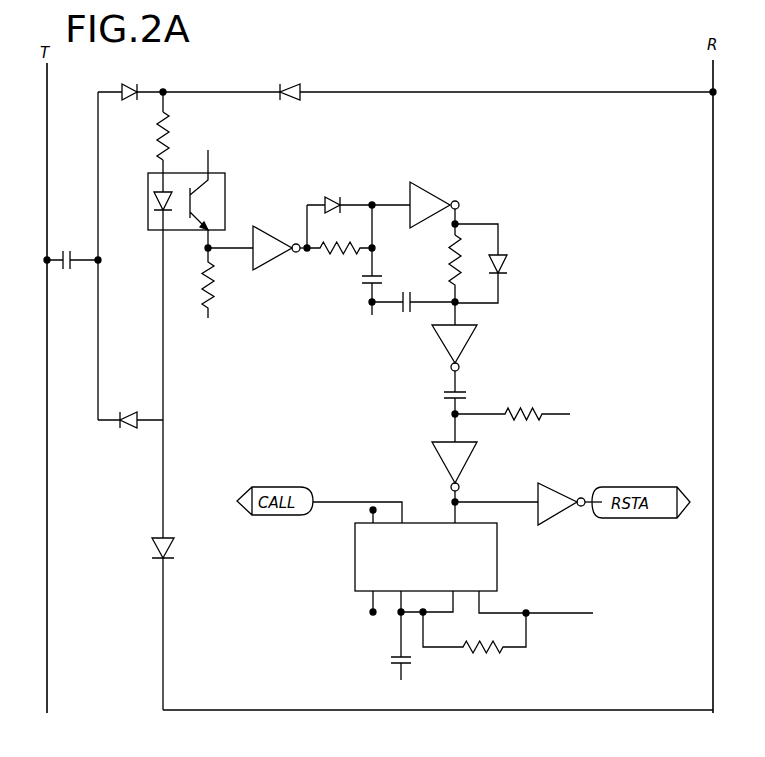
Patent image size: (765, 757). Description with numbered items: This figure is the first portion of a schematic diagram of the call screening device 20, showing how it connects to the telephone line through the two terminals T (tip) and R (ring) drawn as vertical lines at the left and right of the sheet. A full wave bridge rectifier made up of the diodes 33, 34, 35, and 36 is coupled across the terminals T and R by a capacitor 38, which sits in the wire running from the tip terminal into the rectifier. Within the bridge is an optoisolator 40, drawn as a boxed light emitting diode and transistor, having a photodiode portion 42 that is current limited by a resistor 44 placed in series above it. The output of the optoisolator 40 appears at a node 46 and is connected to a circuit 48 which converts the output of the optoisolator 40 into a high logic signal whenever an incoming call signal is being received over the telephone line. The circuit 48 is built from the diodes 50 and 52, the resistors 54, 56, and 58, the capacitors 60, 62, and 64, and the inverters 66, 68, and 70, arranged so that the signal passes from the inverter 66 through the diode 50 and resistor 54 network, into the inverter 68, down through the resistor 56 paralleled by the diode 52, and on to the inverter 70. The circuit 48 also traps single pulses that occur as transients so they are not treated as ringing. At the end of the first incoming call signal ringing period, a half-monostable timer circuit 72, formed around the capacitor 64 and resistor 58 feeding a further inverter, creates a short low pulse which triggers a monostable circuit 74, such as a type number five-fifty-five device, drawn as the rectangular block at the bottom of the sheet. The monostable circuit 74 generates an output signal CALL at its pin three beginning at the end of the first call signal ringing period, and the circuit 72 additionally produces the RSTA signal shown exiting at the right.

The call screening device 20 is at (488, 86).
The diode 33 is at (127, 86).
The diode 34 is at (130, 430).
The diode 35 is at (290, 84).
The diode 36 is at (172, 557).
The capacitor 38 is at (72, 266).
The optoisolator 40 is at (243, 172).
The photodiode portion 42 is at (147, 210).
The resistor 44 is at (175, 138).
The node 46 is at (206, 252).
The circuit 48 is at (370, 185).
The diode 50 is at (333, 192).
The diode 52 is at (507, 262).
The resistor 54 is at (336, 258).
The resistor 56 is at (449, 258).
The resistor 58 is at (540, 410).
The capacitor 60 is at (362, 290).
The capacitor 62 is at (400, 315).
The capacitor 64 is at (467, 396).
The inverter 66 is at (273, 265).
The inverter 68 is at (456, 200).
The inverter 70 is at (470, 347).
The half-monostable timer circuit 72 is at (426, 394).
The monostable circuit 74 is at (498, 576).